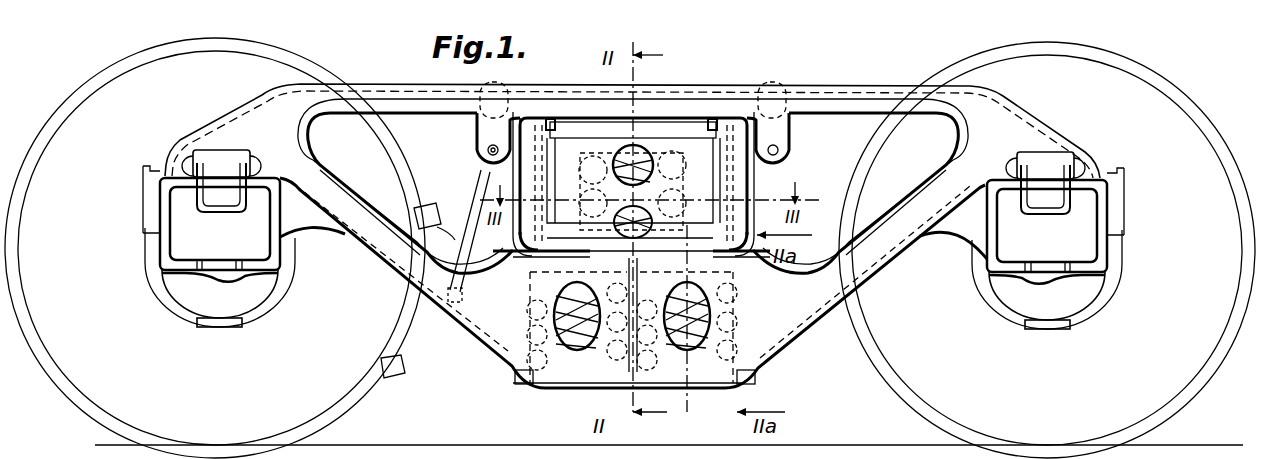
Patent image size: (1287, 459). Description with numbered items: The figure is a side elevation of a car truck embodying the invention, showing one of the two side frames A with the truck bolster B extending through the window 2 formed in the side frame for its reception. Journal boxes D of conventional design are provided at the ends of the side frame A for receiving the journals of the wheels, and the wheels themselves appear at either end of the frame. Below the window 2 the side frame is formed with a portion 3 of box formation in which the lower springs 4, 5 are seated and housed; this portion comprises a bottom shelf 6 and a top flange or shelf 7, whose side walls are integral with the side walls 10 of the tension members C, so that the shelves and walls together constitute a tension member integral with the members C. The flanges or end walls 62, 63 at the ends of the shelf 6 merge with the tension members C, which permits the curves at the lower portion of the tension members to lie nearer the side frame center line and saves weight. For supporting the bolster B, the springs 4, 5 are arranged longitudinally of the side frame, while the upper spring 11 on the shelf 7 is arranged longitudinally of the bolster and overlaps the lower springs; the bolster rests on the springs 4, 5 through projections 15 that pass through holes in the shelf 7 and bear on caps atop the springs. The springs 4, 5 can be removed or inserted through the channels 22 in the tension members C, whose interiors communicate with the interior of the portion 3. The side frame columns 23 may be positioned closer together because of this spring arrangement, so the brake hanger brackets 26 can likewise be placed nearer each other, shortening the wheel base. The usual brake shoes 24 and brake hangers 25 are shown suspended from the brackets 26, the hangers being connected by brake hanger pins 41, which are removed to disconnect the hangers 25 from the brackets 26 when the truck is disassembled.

The side frame A is at (855, 85).
The truck bolster B is at (565, 155).
The tension member C is at (392, 254).
The journal box D is at (160, 238).
The window 2 is at (712, 123).
The tension portion 3 is at (616, 320).
The spring 4 is at (533, 350).
The spring 5 is at (740, 350).
The bottom shelf 6 is at (547, 390).
The top flange or shelf 7 is at (675, 253).
The side wall of tension member 10 is at (475, 302).
The spring 11 is at (652, 176).
The projection 15 is at (543, 263).
The channel 22 is at (330, 198).
The side frame column 23 is at (740, 120).
The brake shoe 24 is at (447, 367).
The brake hanger 25 is at (482, 190).
The brake hanger bracket 26 is at (477, 128).
The brake hanger pin 41 is at (488, 151).
The end wall or flange 62 is at (520, 382).
The end wall or flange 63 is at (748, 383).